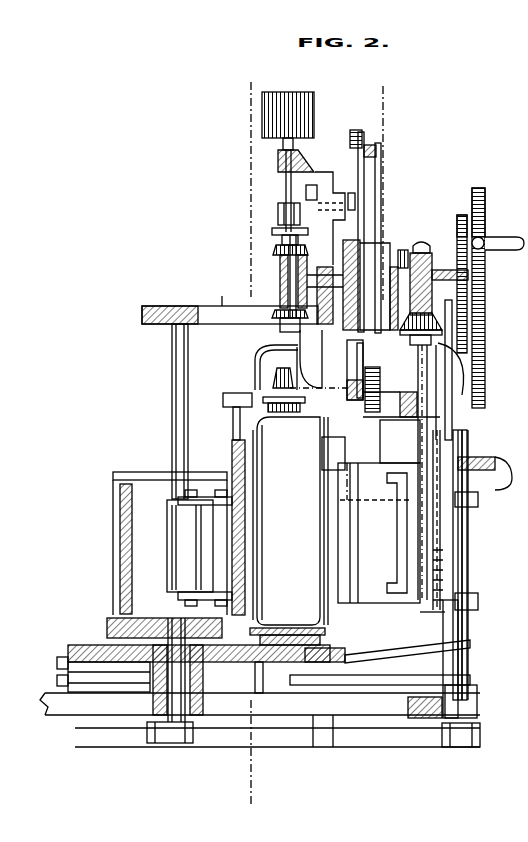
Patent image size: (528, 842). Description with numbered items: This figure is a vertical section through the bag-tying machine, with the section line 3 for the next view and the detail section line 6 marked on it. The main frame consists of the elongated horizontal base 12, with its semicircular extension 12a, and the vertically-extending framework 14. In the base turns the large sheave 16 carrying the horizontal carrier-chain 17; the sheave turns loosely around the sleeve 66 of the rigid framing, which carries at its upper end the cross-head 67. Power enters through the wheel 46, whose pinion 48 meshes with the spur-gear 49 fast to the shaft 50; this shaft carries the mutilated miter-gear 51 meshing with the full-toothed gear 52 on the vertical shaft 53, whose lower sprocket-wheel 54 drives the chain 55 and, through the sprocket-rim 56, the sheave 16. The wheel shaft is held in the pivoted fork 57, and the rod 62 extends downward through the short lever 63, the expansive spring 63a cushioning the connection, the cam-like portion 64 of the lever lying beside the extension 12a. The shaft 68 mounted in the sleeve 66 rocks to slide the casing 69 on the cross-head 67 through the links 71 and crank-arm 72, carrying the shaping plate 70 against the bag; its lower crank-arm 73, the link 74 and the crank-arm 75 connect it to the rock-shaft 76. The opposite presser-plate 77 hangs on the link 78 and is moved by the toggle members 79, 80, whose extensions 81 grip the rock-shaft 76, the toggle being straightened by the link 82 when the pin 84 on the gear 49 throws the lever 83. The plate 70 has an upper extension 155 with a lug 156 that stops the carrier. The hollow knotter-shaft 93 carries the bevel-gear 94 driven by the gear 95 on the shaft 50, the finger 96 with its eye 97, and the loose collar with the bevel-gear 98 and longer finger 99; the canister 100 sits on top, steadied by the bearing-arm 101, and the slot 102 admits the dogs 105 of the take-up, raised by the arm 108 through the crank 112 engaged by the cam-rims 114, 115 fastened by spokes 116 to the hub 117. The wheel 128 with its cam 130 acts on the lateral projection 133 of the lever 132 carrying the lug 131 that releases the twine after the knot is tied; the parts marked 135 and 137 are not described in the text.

The section line 3 is at (250, 444).
The section line 6 is at (375, 297).
The base portion 12 is at (412, 707).
The semicircular extension 12a is at (310, 690).
The framework 14 is at (230, 304).
The sheave 16 is at (92, 634).
The carrier-chain 17 is at (57, 662).
The wheel 46 is at (480, 304).
The pinion 48 is at (468, 270).
The spur-gear 49 is at (478, 188).
The shaft 50 is at (460, 218).
The mutilated miter-gear 51 is at (420, 242).
The full-toothed gear 52 is at (425, 322).
The shaft 53 is at (446, 362).
The sprocket-wheel 54 is at (462, 676).
The chain 55 is at (358, 686).
The sprocket-rim 56 is at (57, 680).
The fork 57 is at (434, 372).
The rod 62 is at (441, 436).
The short lever 63 is at (380, 640).
The expansive spring 63a is at (446, 616).
The cam-like portion 64 is at (368, 650).
The sleeve 66 is at (158, 696).
The cross-head 67 is at (146, 616).
The shaft 68 is at (188, 383).
The casing 69 is at (119, 538).
The plate 70 is at (253, 522).
The links 71 is at (205, 500).
The crank-arm 72 is at (190, 546).
The crank-arm 73 is at (170, 745).
The link 74 is at (225, 746).
The crank-arm 75 is at (472, 736).
The rock-shaft 76 is at (469, 642).
The presser-plate 77 is at (340, 445).
The link 78 is at (322, 532).
The toggle member 79 is at (379, 533).
The toggle member 80 is at (399, 533).
The extensions 81 is at (478, 498).
The link 82 is at (404, 466).
The lever 83 is at (446, 566).
The pin 84 is at (442, 342).
The knotter-shaft 93 is at (282, 275).
The bevel-gear 94 is at (276, 246).
The bevel-gear 95 is at (345, 236).
The finger 96 is at (256, 354).
The eye 97 is at (288, 412).
The bevel-gear 98 is at (283, 312).
The finger 99 is at (296, 352).
The canister 100 is at (312, 126).
The bearing-arm 101 is at (306, 166).
The longitudinal slot 102 is at (285, 190).
The dogs 105 is at (276, 218).
The arm 108 is at (306, 192).
The crank 112 is at (351, 192).
The cam-rim 114 is at (362, 135).
The cam-rim 115 is at (373, 412).
The spokes 116 is at (356, 242).
The hub 117 is at (396, 260).
The wheel 128 is at (398, 258).
The cam 130 is at (352, 282).
The lug 131 is at (318, 342).
The lever 132 is at (280, 326).
The lateral projection 133 is at (355, 360).
The boss 135 is at (404, 406).
The bar 137 is at (378, 150).
The upper extension 155 is at (233, 422).
The lug 156 is at (235, 393).